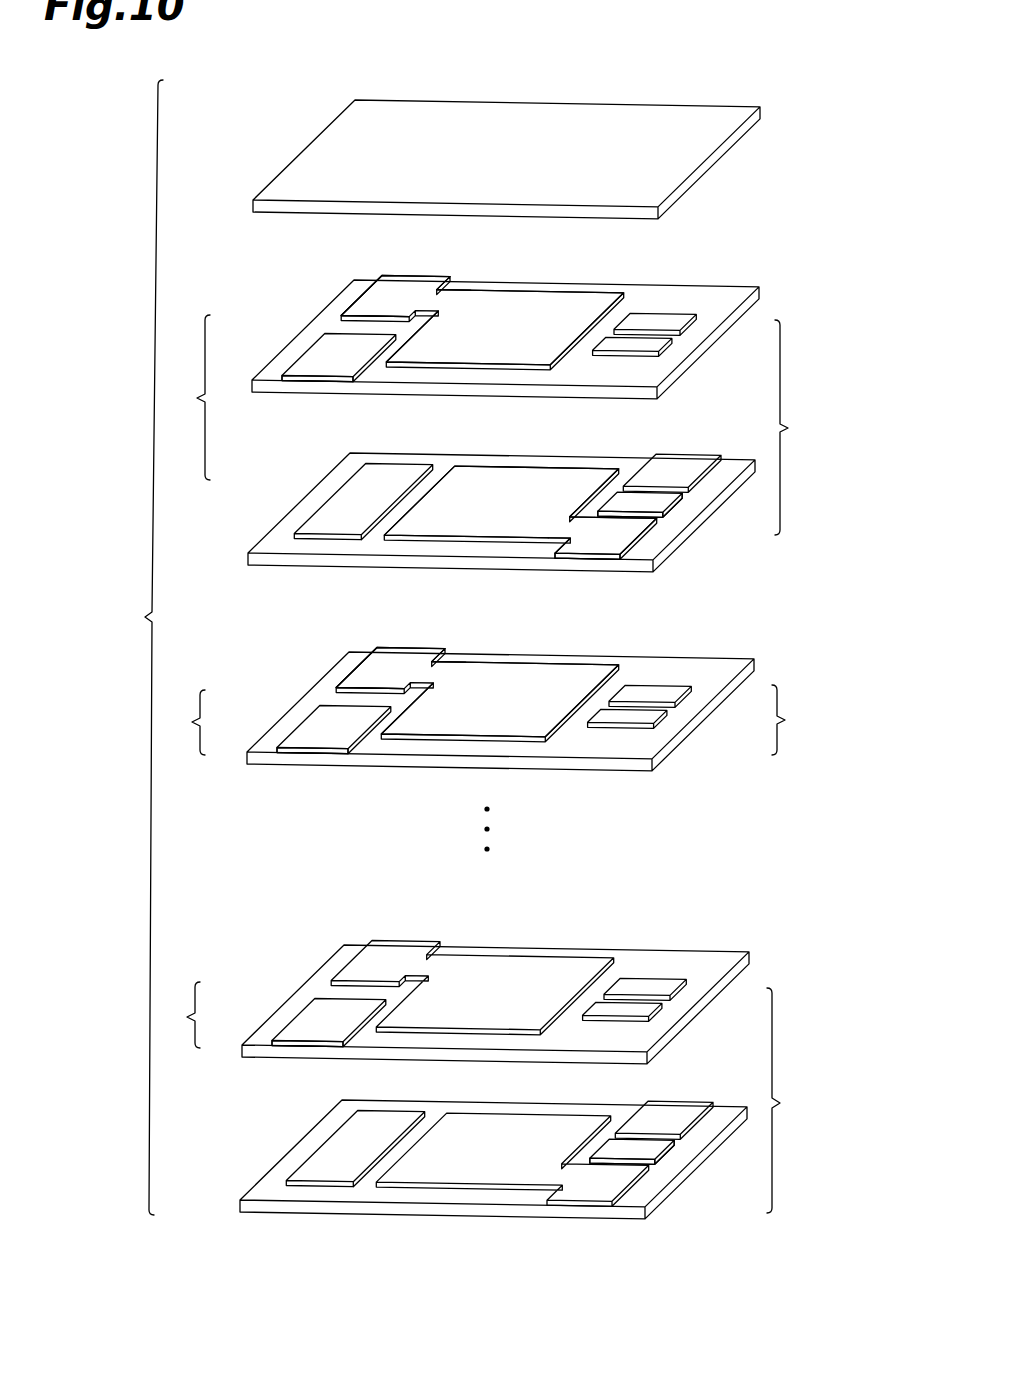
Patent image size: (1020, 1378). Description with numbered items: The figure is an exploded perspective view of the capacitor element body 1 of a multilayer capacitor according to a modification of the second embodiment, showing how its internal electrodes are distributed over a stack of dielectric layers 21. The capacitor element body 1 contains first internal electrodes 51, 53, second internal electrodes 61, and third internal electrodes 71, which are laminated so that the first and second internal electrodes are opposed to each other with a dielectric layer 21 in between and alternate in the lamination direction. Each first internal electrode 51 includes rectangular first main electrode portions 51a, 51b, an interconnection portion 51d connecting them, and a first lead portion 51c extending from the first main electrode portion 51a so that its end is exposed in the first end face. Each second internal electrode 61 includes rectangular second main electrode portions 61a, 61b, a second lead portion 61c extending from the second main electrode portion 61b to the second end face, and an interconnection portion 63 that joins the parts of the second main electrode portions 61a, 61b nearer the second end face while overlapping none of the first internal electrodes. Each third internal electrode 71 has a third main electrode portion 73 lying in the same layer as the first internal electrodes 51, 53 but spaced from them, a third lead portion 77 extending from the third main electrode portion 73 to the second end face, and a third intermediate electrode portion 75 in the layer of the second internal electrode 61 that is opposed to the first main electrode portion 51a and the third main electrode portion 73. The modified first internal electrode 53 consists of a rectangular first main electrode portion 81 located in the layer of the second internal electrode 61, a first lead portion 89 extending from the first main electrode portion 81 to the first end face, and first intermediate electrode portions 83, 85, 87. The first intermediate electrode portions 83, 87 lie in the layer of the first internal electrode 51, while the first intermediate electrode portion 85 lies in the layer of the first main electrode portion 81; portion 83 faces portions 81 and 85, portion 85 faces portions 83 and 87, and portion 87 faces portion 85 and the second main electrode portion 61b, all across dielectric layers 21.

The capacitor element body 1 is at (145, 647).
The dielectric layer 21 is at (308, 146).
The first internal electrode 51 is at (562, 291).
The first main electrode portion 51a is at (367, 310).
The first main electrode portion 51b is at (512, 322).
The first lead portion 51c is at (392, 286).
The interconnection portion 51d is at (437, 298).
The first internal electrode 53 is at (794, 766).
The second internal electrode 61 is at (562, 467).
The second main electrode portion 61a is at (508, 487).
The second main electrode portion 61b is at (630, 530).
The second lead portion 61c is at (643, 570).
The interconnection portion 63 is at (568, 525).
The third internal electrode 71 is at (183, 681).
The third main electrode portion 73 is at (347, 340).
The third intermediate electrode portion 75 is at (360, 472).
The third lead portion 77 is at (320, 367).
The first main electrode portion 81 is at (673, 478).
The first intermediate electrode portion 83 is at (674, 321).
The first intermediate electrode portion 85 is at (663, 500).
The first intermediate electrode portion 87 is at (659, 346).
The first lead portion 89 is at (678, 462).